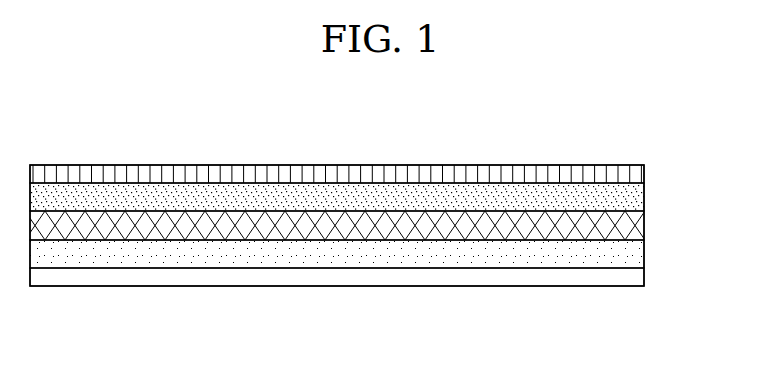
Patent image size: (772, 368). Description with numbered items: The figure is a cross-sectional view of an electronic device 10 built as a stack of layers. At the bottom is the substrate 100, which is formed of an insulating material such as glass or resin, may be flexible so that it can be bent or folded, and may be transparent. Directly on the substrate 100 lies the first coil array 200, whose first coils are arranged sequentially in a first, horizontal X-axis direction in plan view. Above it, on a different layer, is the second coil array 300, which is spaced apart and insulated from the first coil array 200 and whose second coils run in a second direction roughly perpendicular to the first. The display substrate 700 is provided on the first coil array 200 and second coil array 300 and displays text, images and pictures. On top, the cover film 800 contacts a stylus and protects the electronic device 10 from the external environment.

The electronic device 10 is at (350, 350).
The substrate 100 is at (637, 275).
The first coil array 200 is at (637, 253).
The second coil array 300 is at (637, 225).
The display substrate 700 is at (636, 195).
The cover film 800 is at (637, 173).